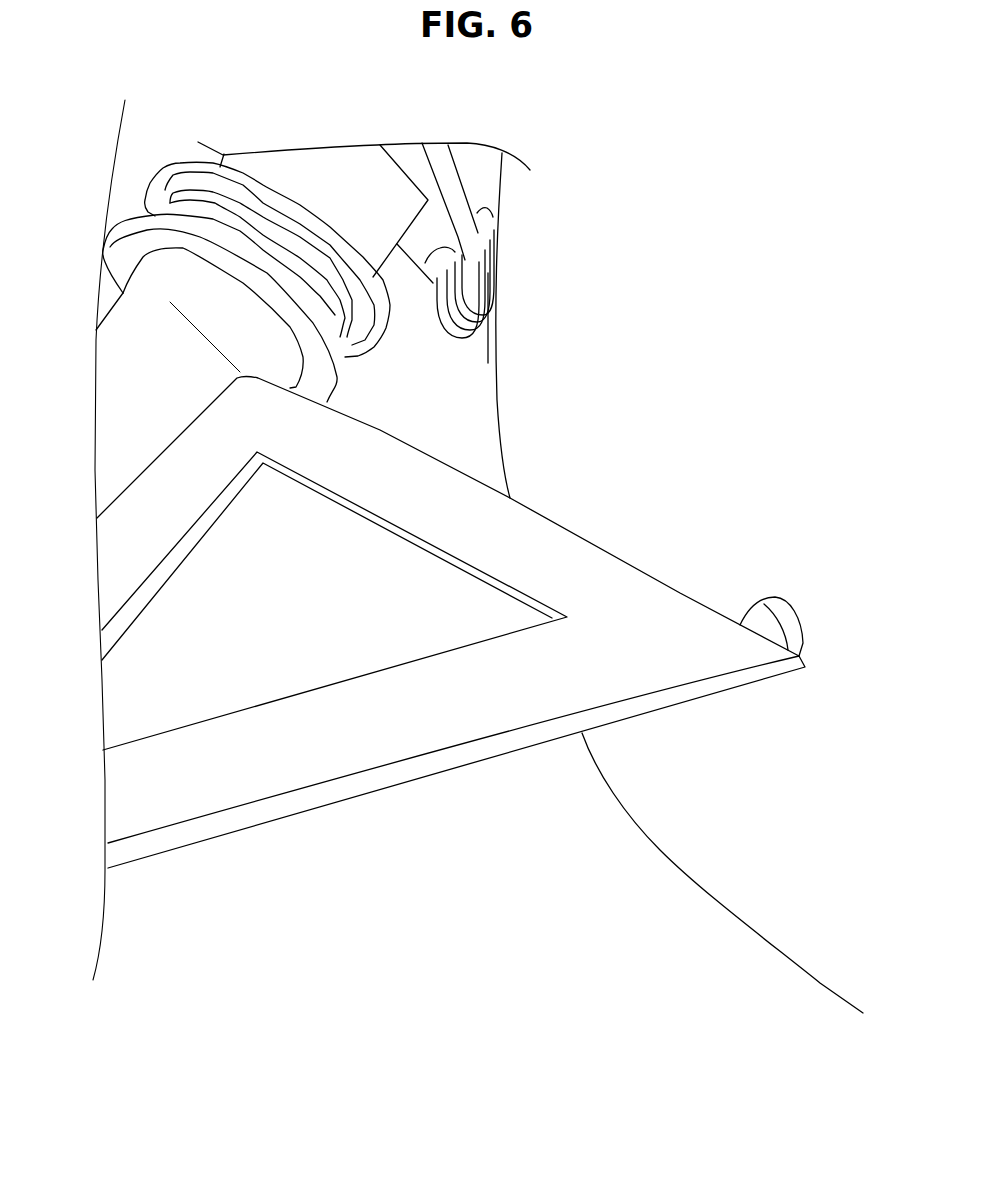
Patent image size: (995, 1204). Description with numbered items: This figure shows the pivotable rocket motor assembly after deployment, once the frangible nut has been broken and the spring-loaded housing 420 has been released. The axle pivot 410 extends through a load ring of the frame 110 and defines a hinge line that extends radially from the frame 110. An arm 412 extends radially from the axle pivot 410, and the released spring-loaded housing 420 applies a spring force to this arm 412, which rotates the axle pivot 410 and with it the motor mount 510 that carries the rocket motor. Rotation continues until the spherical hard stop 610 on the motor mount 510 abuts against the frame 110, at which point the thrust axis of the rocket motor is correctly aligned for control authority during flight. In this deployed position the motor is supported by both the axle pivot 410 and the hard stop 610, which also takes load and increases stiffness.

The frame 110 is at (652, 842).
The axle pivot 410 is at (124, 293).
The arm 412 is at (432, 158).
The spring-loaded housing 420 is at (463, 333).
The motor mount 510 is at (373, 790).
The hard stop 610 is at (788, 610).